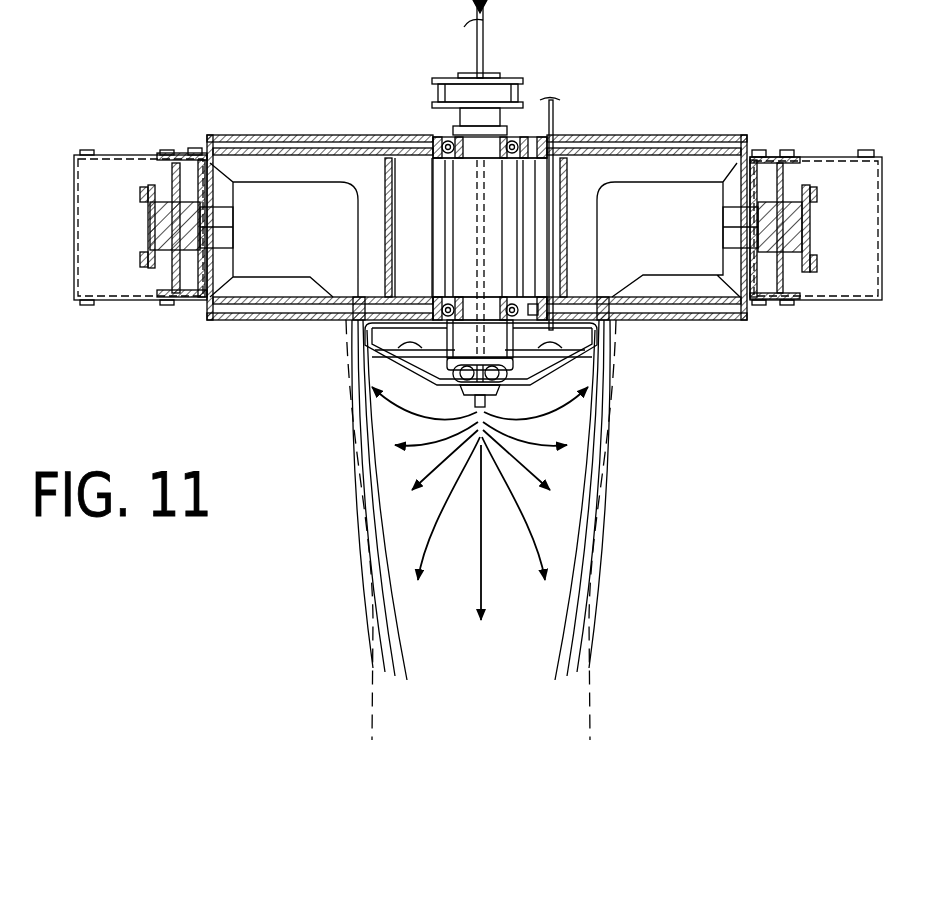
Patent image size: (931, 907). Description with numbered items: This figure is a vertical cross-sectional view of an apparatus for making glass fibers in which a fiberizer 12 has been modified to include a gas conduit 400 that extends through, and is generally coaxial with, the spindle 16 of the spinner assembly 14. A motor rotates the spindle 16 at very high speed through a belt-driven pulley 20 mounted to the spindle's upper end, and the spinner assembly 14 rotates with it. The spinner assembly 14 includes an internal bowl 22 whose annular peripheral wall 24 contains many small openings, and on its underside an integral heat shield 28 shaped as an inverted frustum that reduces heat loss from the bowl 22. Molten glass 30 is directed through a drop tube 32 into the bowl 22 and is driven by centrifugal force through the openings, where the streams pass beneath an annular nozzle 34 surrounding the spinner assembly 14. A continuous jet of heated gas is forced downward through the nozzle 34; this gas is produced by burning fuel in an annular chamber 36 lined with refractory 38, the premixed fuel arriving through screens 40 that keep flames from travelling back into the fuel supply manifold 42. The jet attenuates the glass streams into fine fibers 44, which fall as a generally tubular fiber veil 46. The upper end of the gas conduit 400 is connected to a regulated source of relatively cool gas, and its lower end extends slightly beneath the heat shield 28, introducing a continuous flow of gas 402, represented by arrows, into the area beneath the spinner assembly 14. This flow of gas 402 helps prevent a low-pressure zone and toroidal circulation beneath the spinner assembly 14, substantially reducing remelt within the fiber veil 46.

The fiberizer 12 is at (664, 94).
The gas conduit 400 is at (477, 48).
The belt-driven pulley 20 is at (522, 92).
The spindle 16 is at (467, 117).
The molten glass 30 is at (557, 110).
The refractory 38 is at (706, 148).
The drop tube 32 is at (569, 222).
The annular chamber 36 is at (705, 251).
The annular nozzle 34 is at (349, 300).
The screens 40 is at (810, 218).
The fuel supply manifold 42 is at (867, 257).
The spinner assembly 14 is at (607, 342).
The heat shield 28 is at (563, 371).
The peripheral wall 24 is at (368, 328).
The internal bowl 22 is at (408, 347).
The fibers 44 is at (388, 615).
The fiber veil 46 is at (600, 457).
The flow of gas 402 is at (437, 527).